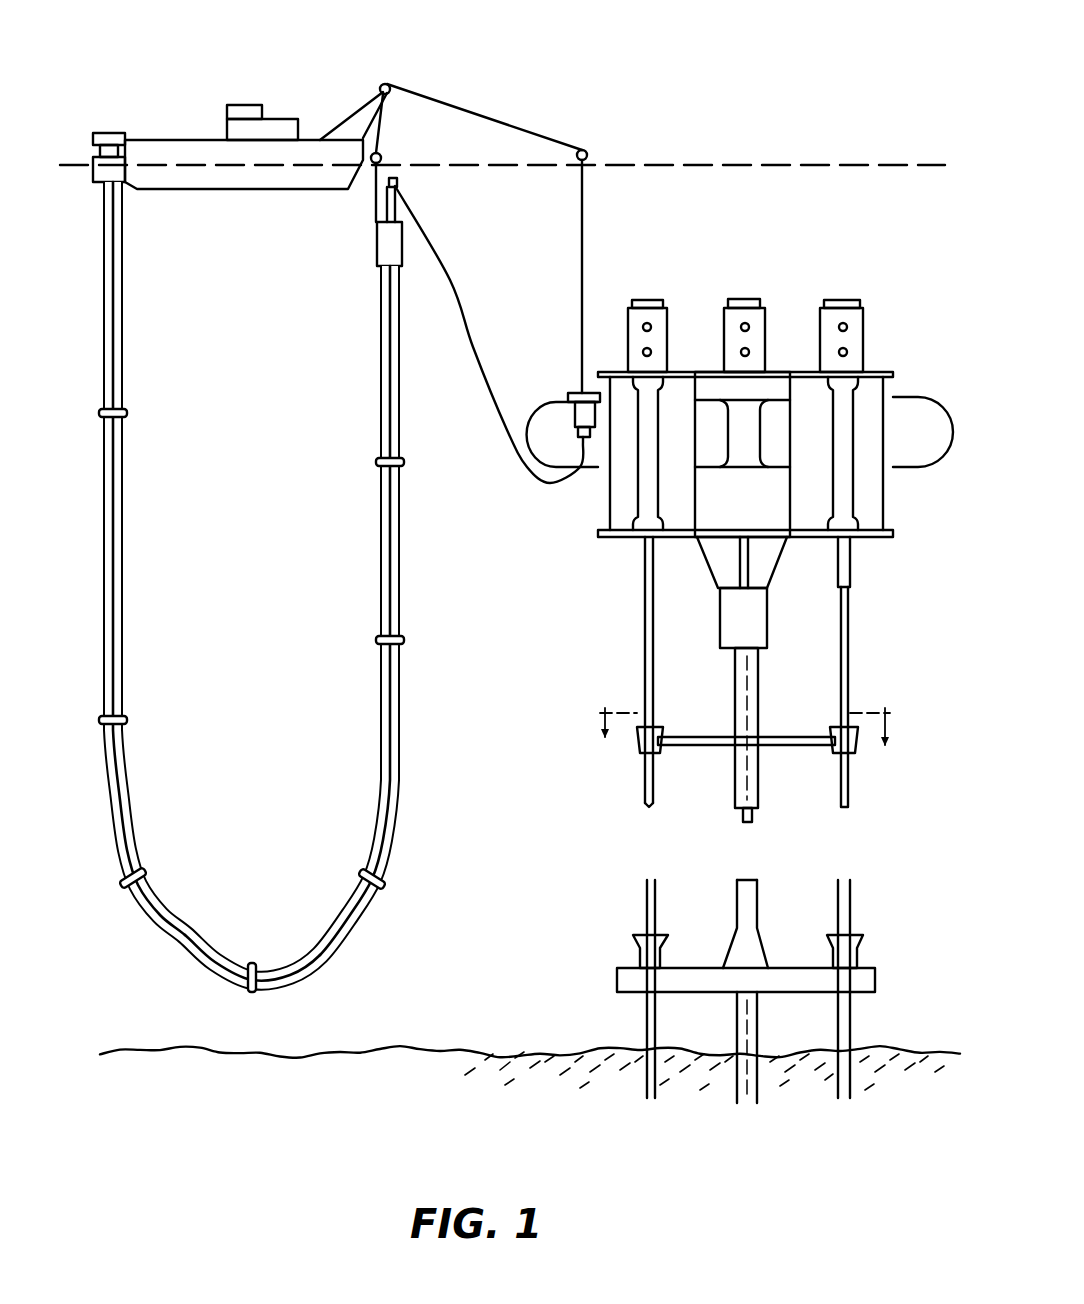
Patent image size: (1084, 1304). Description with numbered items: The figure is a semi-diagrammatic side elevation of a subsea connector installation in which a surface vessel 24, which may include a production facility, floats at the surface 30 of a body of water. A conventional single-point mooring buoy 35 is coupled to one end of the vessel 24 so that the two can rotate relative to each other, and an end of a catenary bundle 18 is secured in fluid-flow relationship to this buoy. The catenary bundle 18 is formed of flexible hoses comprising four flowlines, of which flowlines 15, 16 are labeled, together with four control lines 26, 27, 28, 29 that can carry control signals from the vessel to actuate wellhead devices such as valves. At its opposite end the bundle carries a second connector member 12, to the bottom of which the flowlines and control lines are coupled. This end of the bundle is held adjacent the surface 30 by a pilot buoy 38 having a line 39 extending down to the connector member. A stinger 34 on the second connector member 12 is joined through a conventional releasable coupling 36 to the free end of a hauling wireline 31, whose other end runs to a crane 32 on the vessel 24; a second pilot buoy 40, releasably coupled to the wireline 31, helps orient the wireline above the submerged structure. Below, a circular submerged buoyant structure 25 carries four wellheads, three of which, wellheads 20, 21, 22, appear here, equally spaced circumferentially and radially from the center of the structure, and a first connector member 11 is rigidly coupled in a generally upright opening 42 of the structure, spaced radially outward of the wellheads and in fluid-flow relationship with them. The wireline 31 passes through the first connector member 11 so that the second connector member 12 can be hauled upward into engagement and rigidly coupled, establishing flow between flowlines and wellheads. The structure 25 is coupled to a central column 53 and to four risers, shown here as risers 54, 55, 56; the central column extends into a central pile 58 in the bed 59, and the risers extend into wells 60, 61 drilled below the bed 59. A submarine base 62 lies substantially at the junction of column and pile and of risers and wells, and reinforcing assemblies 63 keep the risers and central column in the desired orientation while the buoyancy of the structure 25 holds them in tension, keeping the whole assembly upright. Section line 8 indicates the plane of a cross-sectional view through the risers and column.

The section line 8- 8 is at (746, 746).
The first connector member 11 is at (574, 390).
The second connector member 12 is at (376, 243).
The flowline 15 is at (400, 757).
The flowline 16 is at (384, 760).
The catenary bundle 18 is at (405, 613).
The wellhead 20 is at (645, 300).
The wellhead 21 is at (737, 300).
The wellhead 22 is at (833, 300).
The surface vessel 24 is at (198, 132).
The submerged buoyant structure 25 is at (912, 390).
The control line 26 is at (380, 374).
The control line 27 is at (355, 610).
The control line 28 is at (149, 558).
The control line 29 is at (252, 958).
The surface 30 is at (802, 162).
The hauling wireline 31 is at (583, 223).
The crane 32 is at (361, 105).
The stinger 34 is at (386, 213).
The single-point mooring buoy 35 is at (80, 136).
The releasable coupling 36 is at (398, 181).
The pilot buoy 38 is at (381, 152).
The line 39 is at (372, 186).
The second pilot buoy 40 is at (588, 150).
The upright opening 42 is at (578, 447).
The central column 53 is at (758, 700).
The riser 54 is at (850, 660).
The riser 55 is at (752, 560).
The riser 56 is at (645, 655).
The central pile 58 is at (757, 1008).
The bed 59 is at (876, 1052).
The well 60 is at (860, 955).
The well 61 is at (638, 955).
The submarine base 62 is at (876, 980).
The reinforcing assembly 63 is at (775, 738).